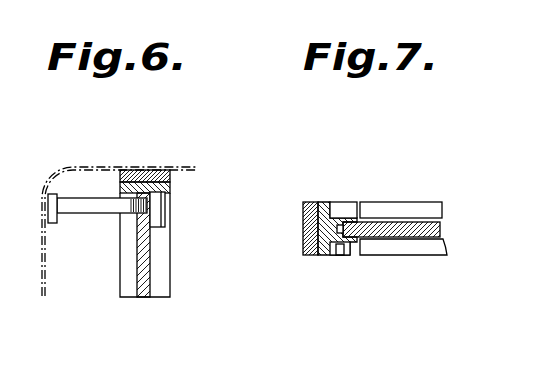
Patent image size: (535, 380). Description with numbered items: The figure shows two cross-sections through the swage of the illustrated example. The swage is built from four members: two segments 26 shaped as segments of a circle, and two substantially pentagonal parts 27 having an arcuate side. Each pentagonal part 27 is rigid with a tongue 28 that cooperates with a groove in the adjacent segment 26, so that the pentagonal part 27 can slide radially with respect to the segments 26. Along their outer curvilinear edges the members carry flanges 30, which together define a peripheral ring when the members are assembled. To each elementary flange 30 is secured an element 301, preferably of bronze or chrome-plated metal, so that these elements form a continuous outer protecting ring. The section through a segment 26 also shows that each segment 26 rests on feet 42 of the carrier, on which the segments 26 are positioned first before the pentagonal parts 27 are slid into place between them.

In FIG. 6, the segment 26 is at (153, 280).
In FIG. 7, the segment 26 is at (338, 247).
In FIG. 7, the pentagonal part 27 is at (407, 226).
In FIG. 7, the tongue 28 is at (347, 247).
In FIG. 6, the flange 30 is at (170, 185).
In FIG. 7, the flange 30 is at (320, 202).
In FIG. 6, the protecting element 301 is at (157, 168).
In FIG. 7, the protecting element 301 is at (307, 202).
In FIG. 6, the foot 42 is at (80, 203).